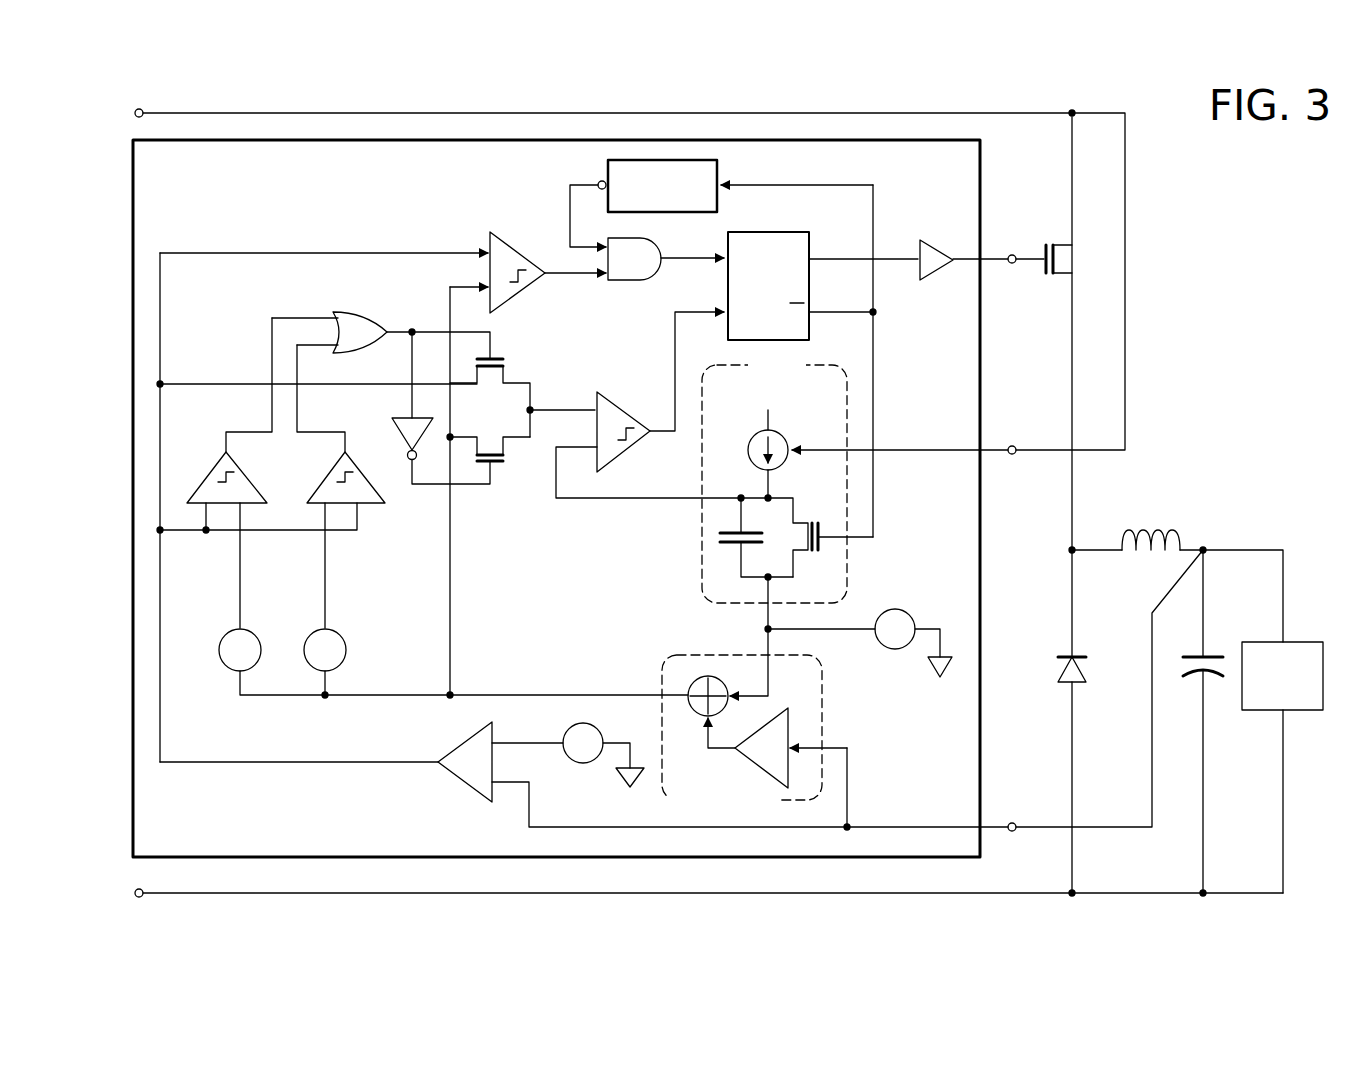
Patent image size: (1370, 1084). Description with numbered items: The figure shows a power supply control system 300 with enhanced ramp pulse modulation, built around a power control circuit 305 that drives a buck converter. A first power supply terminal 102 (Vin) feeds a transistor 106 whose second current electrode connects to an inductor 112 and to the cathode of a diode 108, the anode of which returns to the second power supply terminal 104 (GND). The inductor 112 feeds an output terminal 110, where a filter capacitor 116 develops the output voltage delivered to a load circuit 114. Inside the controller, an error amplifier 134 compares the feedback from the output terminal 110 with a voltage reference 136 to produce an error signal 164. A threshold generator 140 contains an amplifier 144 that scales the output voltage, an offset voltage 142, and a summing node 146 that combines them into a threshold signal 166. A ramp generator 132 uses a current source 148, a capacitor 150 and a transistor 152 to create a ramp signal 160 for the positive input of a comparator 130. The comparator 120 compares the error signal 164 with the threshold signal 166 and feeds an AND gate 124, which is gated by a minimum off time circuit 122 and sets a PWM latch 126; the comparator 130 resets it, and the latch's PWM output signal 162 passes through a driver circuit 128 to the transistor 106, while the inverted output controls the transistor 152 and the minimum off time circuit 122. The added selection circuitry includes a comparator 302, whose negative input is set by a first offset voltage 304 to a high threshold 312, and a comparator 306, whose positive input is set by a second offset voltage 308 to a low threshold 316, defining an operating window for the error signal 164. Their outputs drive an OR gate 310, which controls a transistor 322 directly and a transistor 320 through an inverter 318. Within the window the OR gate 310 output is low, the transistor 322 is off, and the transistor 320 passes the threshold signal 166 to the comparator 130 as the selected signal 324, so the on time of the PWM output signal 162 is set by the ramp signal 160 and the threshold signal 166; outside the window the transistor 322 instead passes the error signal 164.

The first power supply terminal 102 is at (241, 108).
The second power supply terminal 104 is at (241, 888).
The transistor 106 is at (1070, 253).
The diode 108 is at (1075, 650).
The output terminal 110 is at (1250, 542).
The inductor 112 is at (1148, 524).
The load circuit 114 is at (1312, 634).
The filter capacitor 116 is at (1185, 652).
The comparator 120 is at (515, 245).
The minimum off time circuit 122 is at (722, 172).
The AND gate 124 is at (628, 284).
The PWM latch 126 is at (780, 232).
The driver circuit 128 is at (938, 240).
The comparator 130 is at (634, 408).
The ramp generator 132 is at (702, 548).
The error amplifier 134 is at (455, 748).
The voltage reference 136 is at (578, 763).
The threshold generator 140 is at (822, 717).
The offset voltage 142 is at (893, 650).
The amplifier 144 is at (786, 714).
The summing node 146 is at (692, 684).
The current source 148 is at (745, 452).
The capacitor 150 is at (735, 555).
The transistor 152 is at (818, 520).
The ramp signal 160 is at (618, 526).
The PWM output signal 162 is at (862, 287).
The error signal 164 is at (330, 790).
The threshold signal 166 is at (487, 692).
The power supply control system 300 is at (1218, 204).
The comparator 302 is at (192, 480).
The first offset voltage 304 is at (228, 676).
The power control circuit 305 is at (133, 310).
The comparator 306 is at (310, 480).
The second offset voltage 308 is at (304, 652).
The OR gate 310 is at (370, 313).
The high threshold 312 is at (232, 585).
The low threshold 316 is at (331, 580).
The inverter 318 is at (400, 444).
The transistor 320 is at (503, 462).
The transistor 322 is at (491, 367).
The selected signal 324 is at (585, 406).